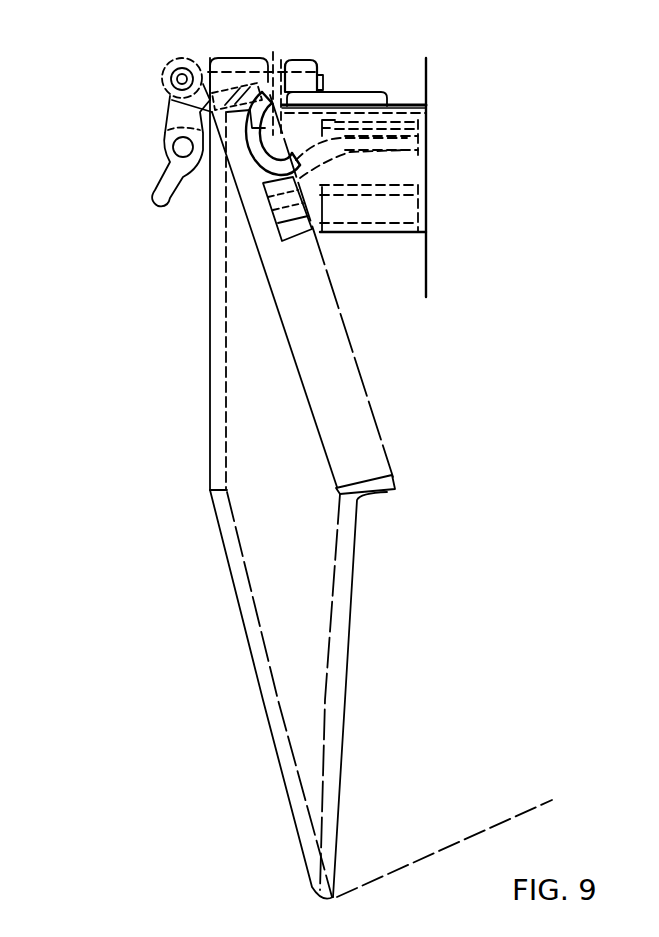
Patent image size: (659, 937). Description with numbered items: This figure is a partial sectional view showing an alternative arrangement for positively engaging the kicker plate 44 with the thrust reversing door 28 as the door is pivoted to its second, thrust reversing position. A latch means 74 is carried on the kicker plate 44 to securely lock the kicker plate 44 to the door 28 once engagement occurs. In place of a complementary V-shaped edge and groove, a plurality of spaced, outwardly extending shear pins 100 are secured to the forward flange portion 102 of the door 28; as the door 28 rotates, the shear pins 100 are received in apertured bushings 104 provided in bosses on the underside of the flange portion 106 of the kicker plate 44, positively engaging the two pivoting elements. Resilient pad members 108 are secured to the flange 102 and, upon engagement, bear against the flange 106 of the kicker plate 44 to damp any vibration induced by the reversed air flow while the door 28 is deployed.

The thrust reversing door 28 is at (427, 267).
The kicker plate 44 is at (350, 617).
The latch means 74 is at (152, 115).
The shear pins 100 is at (267, 166).
The forward flange portion 102 is at (400, 233).
The apertured bushings 104 is at (274, 52).
The flange portion 106 is at (388, 493).
The resilient pad members 108 is at (307, 250).